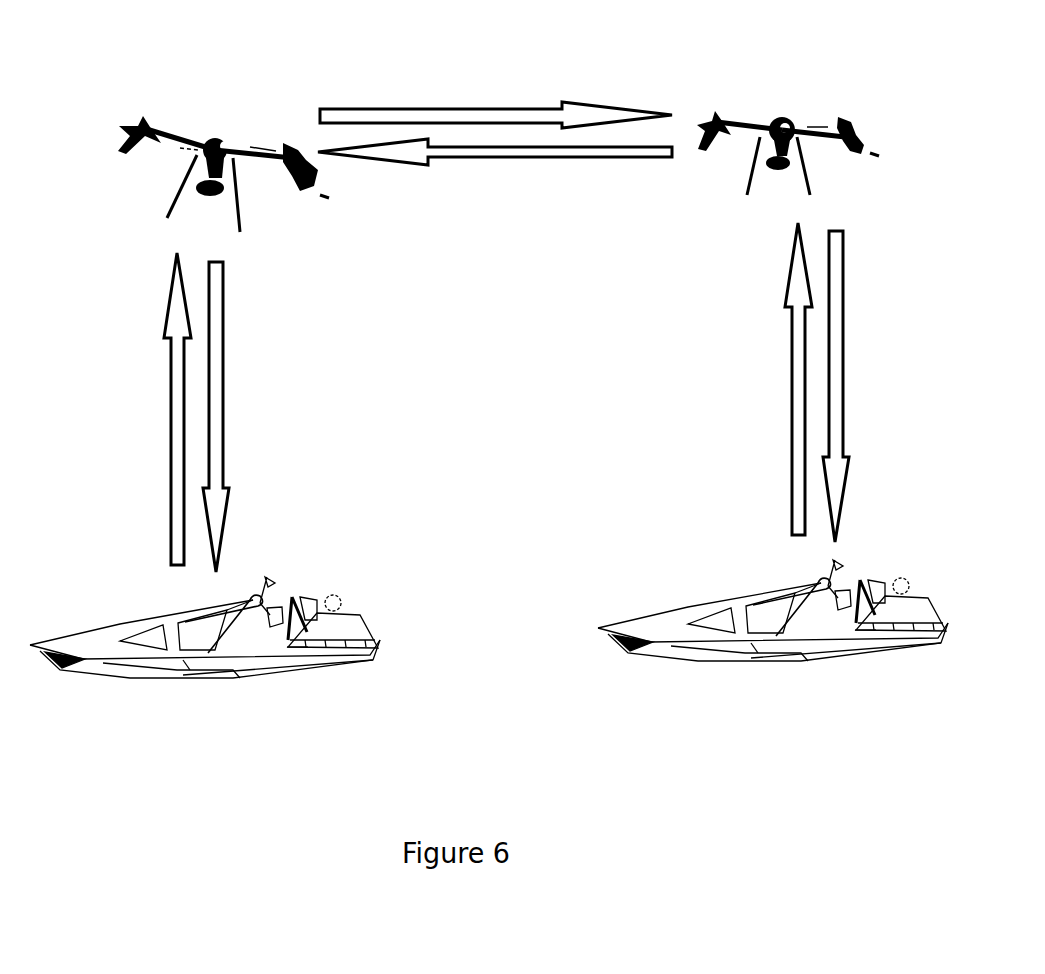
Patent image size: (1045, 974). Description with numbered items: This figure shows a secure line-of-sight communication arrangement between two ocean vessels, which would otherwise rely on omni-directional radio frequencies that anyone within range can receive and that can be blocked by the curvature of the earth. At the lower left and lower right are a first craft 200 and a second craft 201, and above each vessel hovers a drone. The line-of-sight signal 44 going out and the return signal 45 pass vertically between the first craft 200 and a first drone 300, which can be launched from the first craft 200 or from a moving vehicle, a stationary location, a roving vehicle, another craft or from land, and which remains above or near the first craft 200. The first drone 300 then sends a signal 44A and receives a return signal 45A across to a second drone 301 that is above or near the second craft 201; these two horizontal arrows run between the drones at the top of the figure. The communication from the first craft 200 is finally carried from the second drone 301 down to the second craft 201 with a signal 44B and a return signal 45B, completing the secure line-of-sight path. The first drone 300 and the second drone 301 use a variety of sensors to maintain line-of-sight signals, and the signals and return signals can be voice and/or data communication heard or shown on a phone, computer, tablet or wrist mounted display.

The first drone 300 is at (788, 110).
The second drone 301 is at (182, 173).
The first craft 200 is at (838, 660).
The second craft 201 is at (180, 685).
The line-of-sight signal 44 is at (792, 352).
The return signal 45 is at (843, 343).
The signal 44A is at (510, 157).
The return signal 45A is at (525, 108).
The signal 44B is at (223, 398).
The return signal 45B is at (173, 408).